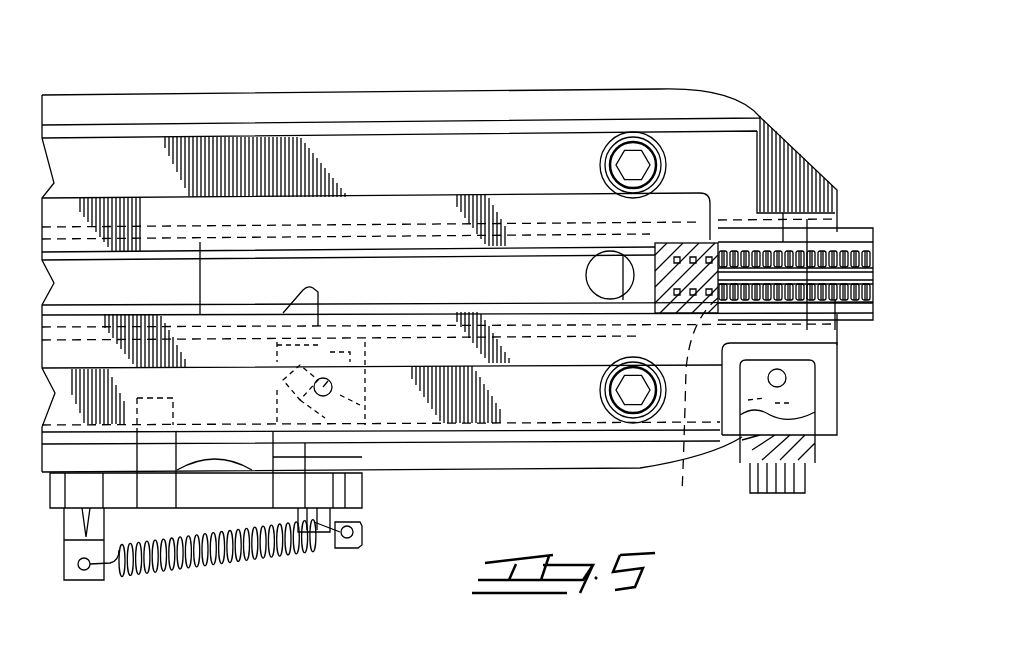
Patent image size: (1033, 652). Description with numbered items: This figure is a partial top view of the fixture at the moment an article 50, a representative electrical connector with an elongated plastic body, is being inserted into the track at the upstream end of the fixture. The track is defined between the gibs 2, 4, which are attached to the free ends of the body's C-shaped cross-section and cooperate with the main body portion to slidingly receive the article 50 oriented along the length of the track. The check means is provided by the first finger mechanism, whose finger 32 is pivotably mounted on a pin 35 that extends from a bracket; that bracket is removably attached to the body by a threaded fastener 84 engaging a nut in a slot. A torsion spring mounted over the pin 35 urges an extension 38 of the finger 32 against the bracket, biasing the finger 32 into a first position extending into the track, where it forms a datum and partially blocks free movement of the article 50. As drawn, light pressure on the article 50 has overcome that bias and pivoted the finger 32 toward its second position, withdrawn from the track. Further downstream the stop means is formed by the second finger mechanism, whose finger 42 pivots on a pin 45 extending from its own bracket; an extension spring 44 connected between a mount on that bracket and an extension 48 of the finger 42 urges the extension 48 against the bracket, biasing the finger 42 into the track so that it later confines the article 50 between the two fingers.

The gib 2 is at (540, 397).
The gib 4 is at (541, 165).
The finger 32 is at (693, 413).
The pin 35 is at (783, 373).
The extension 38 is at (833, 427).
The finger 42 is at (303, 293).
The extension spring 44 is at (240, 553).
The pin 45 is at (275, 383).
The extension 48 is at (358, 525).
The article 50 is at (750, 227).
The threaded fastener 84 is at (803, 478).